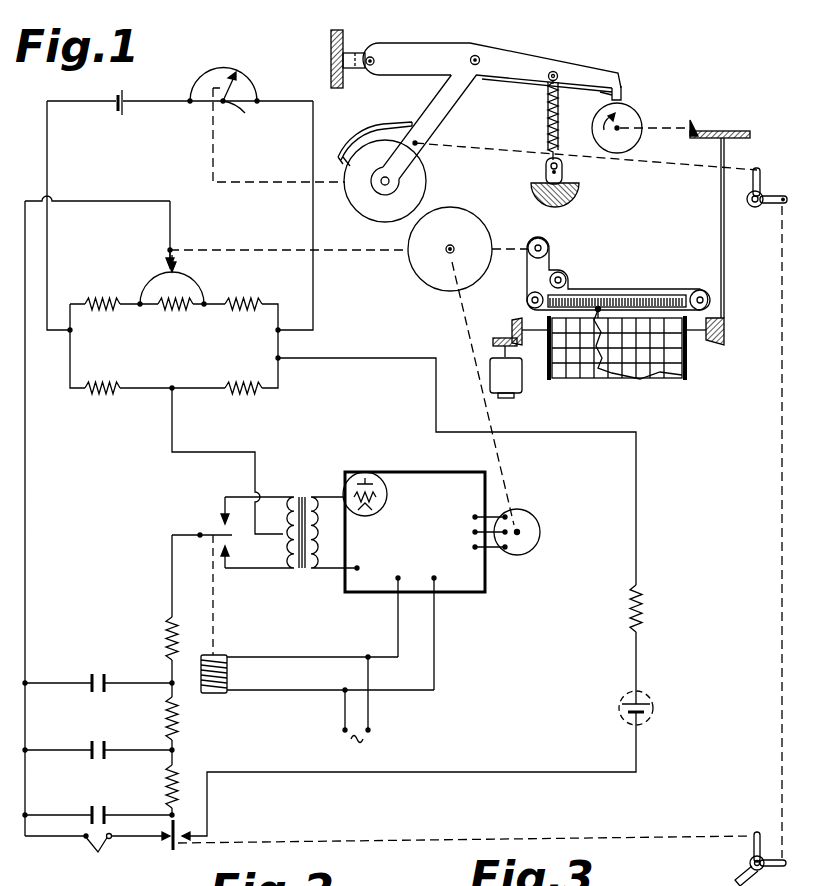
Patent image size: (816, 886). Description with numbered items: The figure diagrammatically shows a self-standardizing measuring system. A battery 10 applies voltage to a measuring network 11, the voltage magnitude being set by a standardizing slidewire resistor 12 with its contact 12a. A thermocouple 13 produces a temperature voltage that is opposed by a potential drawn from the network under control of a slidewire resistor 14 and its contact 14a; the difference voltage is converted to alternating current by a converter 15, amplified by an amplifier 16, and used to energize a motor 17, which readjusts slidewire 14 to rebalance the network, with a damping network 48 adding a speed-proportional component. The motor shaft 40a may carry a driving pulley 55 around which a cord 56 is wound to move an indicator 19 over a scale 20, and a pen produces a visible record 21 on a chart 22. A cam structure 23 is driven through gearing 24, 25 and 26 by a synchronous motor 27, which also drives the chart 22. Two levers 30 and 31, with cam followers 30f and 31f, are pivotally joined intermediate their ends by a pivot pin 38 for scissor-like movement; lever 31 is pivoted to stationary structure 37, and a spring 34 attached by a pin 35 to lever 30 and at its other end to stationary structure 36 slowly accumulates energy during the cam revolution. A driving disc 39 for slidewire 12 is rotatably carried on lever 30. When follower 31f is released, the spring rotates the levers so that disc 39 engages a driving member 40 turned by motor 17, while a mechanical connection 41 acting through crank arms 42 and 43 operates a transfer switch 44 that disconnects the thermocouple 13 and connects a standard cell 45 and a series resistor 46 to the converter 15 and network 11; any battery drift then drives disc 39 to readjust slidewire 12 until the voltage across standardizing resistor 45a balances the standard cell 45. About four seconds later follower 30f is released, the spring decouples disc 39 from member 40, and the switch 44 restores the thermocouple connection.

The battery 10 is at (121, 94).
The measuring network 11 is at (184, 356).
The slidewire resistor 12 is at (221, 70).
The contact 12a is at (356, 144).
The thermocouple 13 is at (93, 846).
The slidewire resistor 14 is at (190, 282).
The contact 14a is at (166, 260).
The converter 15 is at (200, 532).
The amplifier 16 is at (458, 586).
The motor 17 is at (538, 532).
The indicator 19 is at (597, 305).
The scale 20 is at (662, 293).
The visible record 21 is at (620, 375).
The chart 22 is at (680, 360).
The cam structure 23 is at (642, 112).
The gear 24 is at (712, 122).
The gear 25 is at (727, 338).
The gear 26 is at (510, 326).
The motor 27 is at (520, 384).
The lever 30 is at (597, 80).
The cam follower 30f is at (625, 93).
The lever 31 is at (437, 52).
The cam follower 31f is at (608, 95).
The spring 34 is at (548, 120).
The pin 35 is at (558, 70).
The stationary structure 36 is at (568, 180).
The stationary structure 37 is at (372, 56).
The pivot pin 38 is at (472, 55).
The driving disc 39 is at (428, 179).
The driving member 40 is at (472, 228).
The shaft 40a is at (440, 258).
The mechanical connection 41 is at (637, 162).
The crank arm 42 is at (776, 208).
The crank arm 43 is at (752, 856).
The transfer switch 44 is at (168, 848).
The standard cell 45 is at (624, 702).
The standardizing resistor 45a is at (240, 391).
The series resistor 46 is at (630, 606).
The damping network 48 is at (104, 792).
The driving pulley 55 is at (550, 246).
The cord 56 is at (612, 292).